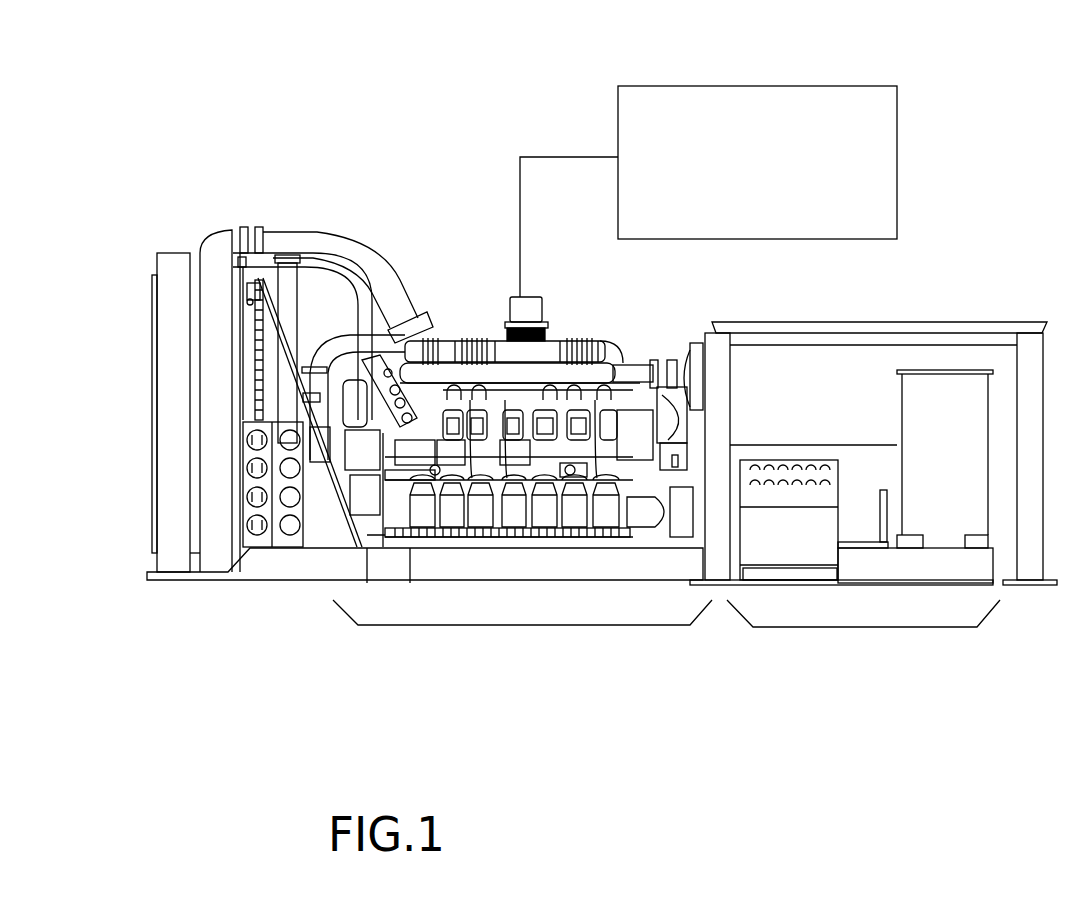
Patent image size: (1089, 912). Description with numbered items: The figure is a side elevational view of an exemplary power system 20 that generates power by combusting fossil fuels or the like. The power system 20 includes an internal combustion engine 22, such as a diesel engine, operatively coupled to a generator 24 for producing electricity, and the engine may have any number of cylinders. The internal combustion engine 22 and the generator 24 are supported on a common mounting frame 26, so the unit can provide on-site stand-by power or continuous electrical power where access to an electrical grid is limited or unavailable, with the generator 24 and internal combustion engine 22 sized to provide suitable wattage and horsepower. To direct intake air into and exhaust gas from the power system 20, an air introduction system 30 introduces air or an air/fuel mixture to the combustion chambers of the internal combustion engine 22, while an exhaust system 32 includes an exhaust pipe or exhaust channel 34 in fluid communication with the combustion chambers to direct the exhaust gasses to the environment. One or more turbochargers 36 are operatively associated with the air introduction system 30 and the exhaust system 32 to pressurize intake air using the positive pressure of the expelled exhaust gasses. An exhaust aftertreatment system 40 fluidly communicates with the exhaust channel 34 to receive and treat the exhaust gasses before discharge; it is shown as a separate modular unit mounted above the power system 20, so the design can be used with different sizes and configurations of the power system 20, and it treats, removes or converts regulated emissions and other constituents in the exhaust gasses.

The power system 20 is at (312, 160).
The internal combustion engine 22 is at (520, 630).
The generator 24 is at (873, 628).
The common mounting frame 26 is at (268, 570).
The air introduction system 30 is at (633, 363).
The exhaust system 32 is at (562, 313).
The exhaust channel 34 is at (518, 308).
The turbocharger 36 is at (493, 320).
The exhaust aftertreatment system 40 is at (783, 104).